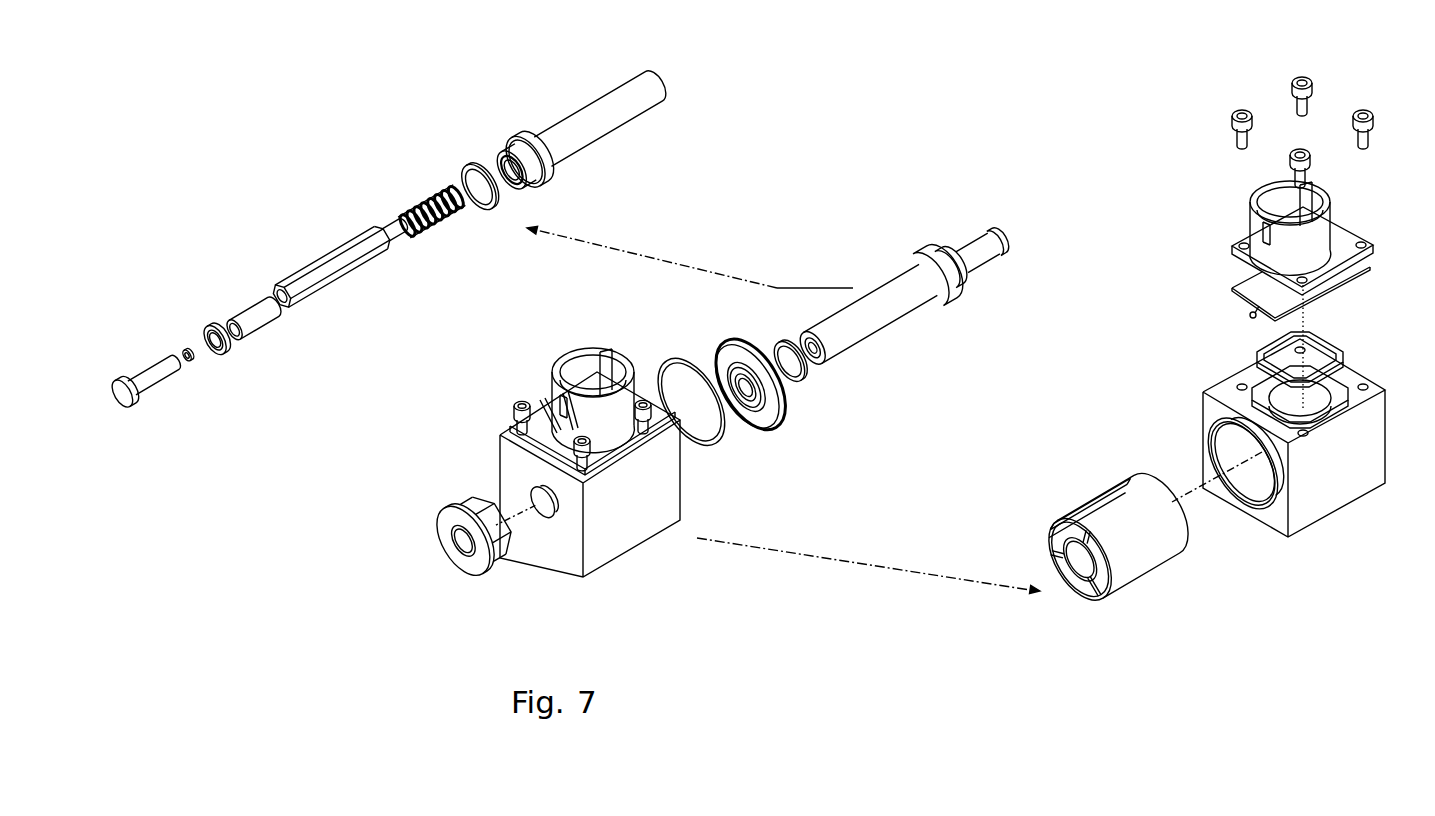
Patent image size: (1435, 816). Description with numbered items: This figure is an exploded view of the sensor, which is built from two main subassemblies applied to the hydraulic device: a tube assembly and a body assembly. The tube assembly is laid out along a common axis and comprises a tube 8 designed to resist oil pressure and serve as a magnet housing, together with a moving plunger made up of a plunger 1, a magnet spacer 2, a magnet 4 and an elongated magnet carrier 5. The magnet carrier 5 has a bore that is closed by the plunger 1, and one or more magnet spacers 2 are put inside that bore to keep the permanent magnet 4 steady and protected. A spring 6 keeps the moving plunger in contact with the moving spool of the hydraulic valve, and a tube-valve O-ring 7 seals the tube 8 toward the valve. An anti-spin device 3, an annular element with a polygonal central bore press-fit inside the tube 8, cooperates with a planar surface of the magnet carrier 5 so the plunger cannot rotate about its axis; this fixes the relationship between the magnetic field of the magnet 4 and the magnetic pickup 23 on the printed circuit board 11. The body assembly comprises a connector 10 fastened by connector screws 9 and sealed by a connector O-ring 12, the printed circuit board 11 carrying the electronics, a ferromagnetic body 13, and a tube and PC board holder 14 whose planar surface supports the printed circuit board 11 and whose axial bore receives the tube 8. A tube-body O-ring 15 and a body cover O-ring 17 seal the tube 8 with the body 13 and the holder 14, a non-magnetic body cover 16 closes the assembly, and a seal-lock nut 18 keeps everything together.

The plunger 1 is at (162, 372).
The magnet spacer 2 is at (192, 358).
The anti-spin device 3 is at (223, 355).
The magnet 4 is at (263, 313).
The magnet carrier 5 is at (337, 278).
The spring 6 is at (433, 197).
The tube-valve O-ring 7 is at (475, 162).
The tube 8 is at (596, 121).
The connector screws 9 is at (1237, 152).
The connector 10 is at (1258, 270).
The printed circuit board 11 is at (1258, 292).
The connector O-ring seal 12 is at (1353, 347).
The body 13 is at (1308, 498).
The tube and PC board holder 14 is at (1133, 572).
The tube-body O-ring 15 is at (810, 377).
The body cover 16 is at (788, 418).
The body cover O-ring 17 is at (730, 455).
The seal-lock nut 18 is at (490, 558).
The magnetic pickup 23 is at (1253, 318).